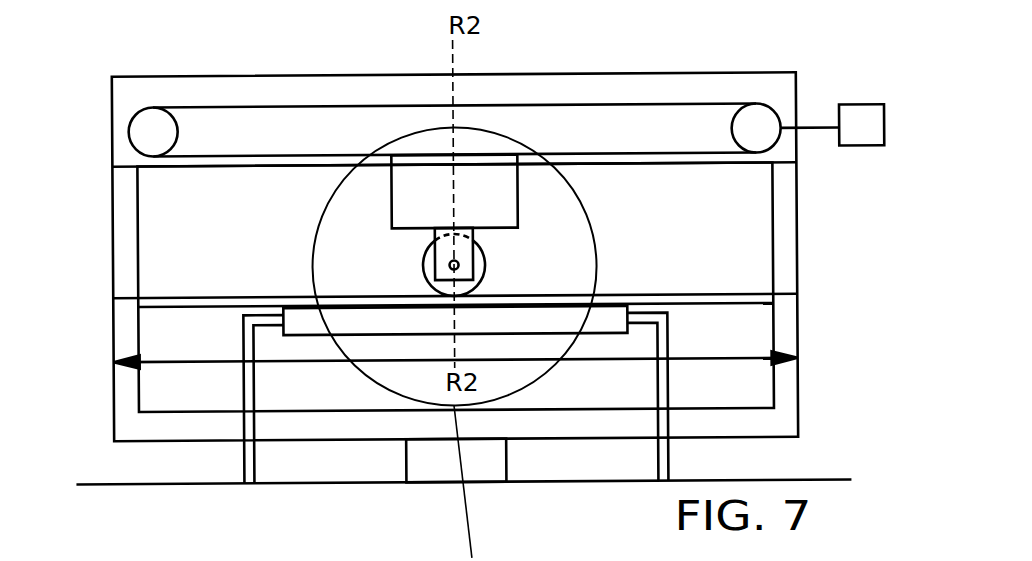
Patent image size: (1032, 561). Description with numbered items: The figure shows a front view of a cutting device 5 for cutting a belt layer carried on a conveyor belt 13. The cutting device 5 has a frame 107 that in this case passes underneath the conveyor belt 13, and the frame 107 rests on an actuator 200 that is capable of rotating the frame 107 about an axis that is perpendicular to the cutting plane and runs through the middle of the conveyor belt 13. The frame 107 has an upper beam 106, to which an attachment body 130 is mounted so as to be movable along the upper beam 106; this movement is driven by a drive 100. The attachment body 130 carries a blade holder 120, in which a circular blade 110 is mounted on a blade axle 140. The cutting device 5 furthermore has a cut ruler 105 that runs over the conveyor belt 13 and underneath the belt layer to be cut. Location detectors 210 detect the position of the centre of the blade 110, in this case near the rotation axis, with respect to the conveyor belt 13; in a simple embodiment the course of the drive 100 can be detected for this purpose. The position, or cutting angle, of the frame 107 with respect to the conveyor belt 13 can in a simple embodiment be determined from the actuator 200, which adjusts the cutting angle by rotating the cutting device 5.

The cutting device 5 is at (672, 87).
The conveyor belt 13 is at (303, 323).
The drive 100 is at (758, 118).
The cut ruler 105 is at (207, 310).
The upper beam 106 is at (123, 115).
The frame 107 is at (125, 342).
The circular blade 110 is at (487, 270).
The blade holder 120 is at (455, 253).
The attachment body 130 is at (498, 197).
The blade axle 140 is at (450, 266).
The actuator 200 is at (483, 463).
The location detectors 210 is at (857, 135).